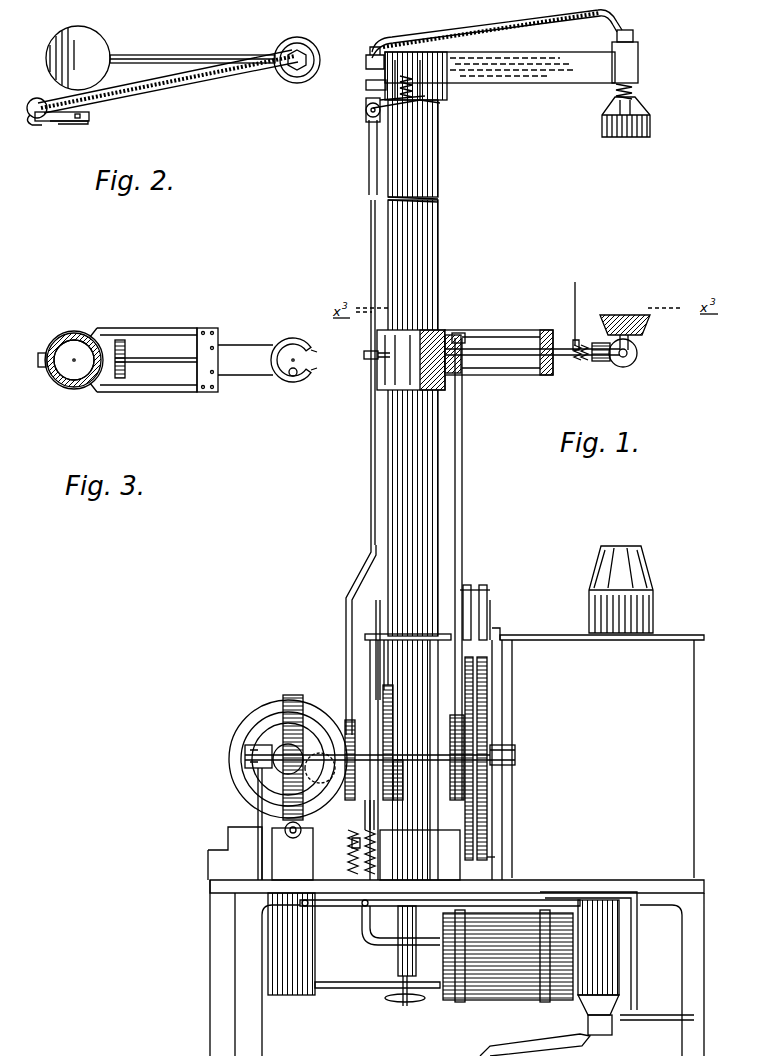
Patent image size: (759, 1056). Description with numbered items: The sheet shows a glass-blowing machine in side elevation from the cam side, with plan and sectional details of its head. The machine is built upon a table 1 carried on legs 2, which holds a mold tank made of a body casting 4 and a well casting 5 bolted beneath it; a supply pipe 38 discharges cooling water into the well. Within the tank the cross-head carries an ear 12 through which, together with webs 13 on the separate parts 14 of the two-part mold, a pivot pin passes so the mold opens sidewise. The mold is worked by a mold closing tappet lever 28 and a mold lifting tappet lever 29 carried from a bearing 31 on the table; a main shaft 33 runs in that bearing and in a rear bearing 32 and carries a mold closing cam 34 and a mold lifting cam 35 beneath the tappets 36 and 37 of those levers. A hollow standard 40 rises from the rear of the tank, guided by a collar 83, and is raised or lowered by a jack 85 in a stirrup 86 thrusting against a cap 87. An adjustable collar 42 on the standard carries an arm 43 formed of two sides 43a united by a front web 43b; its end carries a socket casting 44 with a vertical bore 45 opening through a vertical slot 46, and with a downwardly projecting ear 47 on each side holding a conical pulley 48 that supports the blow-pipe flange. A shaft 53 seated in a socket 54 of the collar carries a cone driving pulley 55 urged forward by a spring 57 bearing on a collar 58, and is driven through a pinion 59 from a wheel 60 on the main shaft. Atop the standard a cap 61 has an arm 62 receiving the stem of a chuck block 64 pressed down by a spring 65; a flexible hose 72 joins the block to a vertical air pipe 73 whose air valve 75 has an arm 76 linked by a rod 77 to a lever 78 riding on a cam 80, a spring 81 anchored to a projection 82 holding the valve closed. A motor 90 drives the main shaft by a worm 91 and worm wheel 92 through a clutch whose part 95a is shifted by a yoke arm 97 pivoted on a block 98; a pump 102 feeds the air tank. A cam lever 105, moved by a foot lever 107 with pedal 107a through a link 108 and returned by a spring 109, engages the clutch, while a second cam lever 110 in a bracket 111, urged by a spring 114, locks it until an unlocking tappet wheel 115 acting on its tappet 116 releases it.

In FIG. 1, the table 1 is at (640, 866).
In FIG. 1, the legs 2 is at (694, 920).
In FIG. 1, the body casting 4 is at (694, 828).
In FIG. 1, the well casting 5 is at (580, 1000).
In FIG. 1, the ear 12 is at (652, 636).
In FIG. 1, the webs 13 is at (650, 632).
In FIG. 1, the separate parts of two-part mold 14 is at (652, 575).
In FIG. 1, the mold closing tappet lever 28 is at (495, 628).
In FIG. 1, the mold lifting tappet lever 29 is at (488, 607).
In FIG. 1, the bearing 31 is at (515, 755).
In FIG. 1, the bearing 32 is at (245, 758).
In FIG. 1, the main shaft 33 is at (415, 755).
In FIG. 1, the mold closing cam 34 is at (490, 856).
In FIG. 1, the mold lifting cam 35 is at (465, 850).
In FIG. 1, the tappet 36 is at (487, 653).
In FIG. 1, the tappet 37 is at (465, 655).
In FIG. 1, the supply pipe 38 is at (520, 1046).
In FIG. 3, the standard 40 is at (78, 340).
In FIG. 1, the standard 40 is at (430, 250).
In FIG. 3, the adjustable collar 42 is at (75, 390).
In FIG. 1, the adjustable collar 42 is at (405, 382).
In FIG. 3, the arm 43 is at (207, 326).
In FIG. 1, the arm 43 is at (530, 328).
In FIG. 3, the sides of arm 43a is at (160, 327).
In FIG. 1, the sides of arm 43a is at (488, 328).
In FIG. 1, the front web 43b is at (555, 372).
In FIG. 3, the socket casting 44 is at (300, 338).
In FIG. 1, the socket casting 44 is at (640, 313).
In FIG. 3, the vertical bore 45 is at (293, 378).
In FIG. 3, the vertical slot 46 is at (316, 360).
In FIG. 1, the vertical slot 46 is at (360, 351).
In FIG. 1, the ear 47 is at (640, 347).
In FIG. 1, the conical pulley 48 is at (638, 358).
In FIG. 3, the shaft 53 is at (156, 351).
In FIG. 1, the shaft 53 is at (487, 360).
In FIG. 1, the socket 54 is at (452, 332).
In FIG. 3, the cone driving pulley 55 is at (121, 338).
In FIG. 1, the cone driving pulley 55 is at (605, 363).
In FIG. 1, the spring 57 is at (585, 343).
In FIG. 1, the collar 58 is at (576, 305).
In FIG. 1, the pinion 59 is at (466, 335).
In FIG. 1, the wheel 60 is at (445, 712).
In FIG. 2, the cap 61 is at (86, 34).
In FIG. 1, the cap 61 is at (447, 95).
In FIG. 2, the arm 62 is at (190, 55).
In FIG. 1, the arm 62 is at (555, 84).
In FIG. 2, the chuck block 64 is at (301, 38).
In FIG. 1, the chuck block 64 is at (652, 126).
In FIG. 1, the spring 65 is at (640, 92).
In FIG. 2, the flexible hose 72 is at (204, 86).
In FIG. 1, the flexible hose 72 is at (522, 16).
In FIG. 1, the vertical air pipe 73 is at (369, 175).
In FIG. 2, the air valve 75 is at (34, 126).
In FIG. 1, the air valve 75 is at (366, 112).
In FIG. 2, the arm 76 is at (72, 124).
In FIG. 1, the arm 76 is at (400, 112).
In FIG. 1, the rod 77 is at (384, 656).
In FIG. 1, the lever 78 is at (388, 677).
In FIG. 1, the cam 80 is at (393, 716).
In FIG. 1, the spring 81 is at (366, 86).
In FIG. 2, the projection 82 is at (90, 116).
In FIG. 1, the projection 82 is at (368, 60).
In FIG. 1, the collar 83 is at (376, 628).
In FIG. 1, the jack 85 is at (403, 1004).
In FIG. 1, the stirrup 86 is at (398, 963).
In FIG. 1, the cap 87 is at (362, 940).
In FIG. 1, the motor 90 is at (232, 730).
In FIG. 1, the worm 91 is at (292, 851).
In FIG. 1, the worm wheel 92 is at (283, 698).
In FIG. 1, the clutch part 95a is at (258, 820).
In FIG. 1, the arm 97 is at (387, 827).
In FIG. 1, the block 98 is at (458, 800).
In FIG. 1, the pump 102 is at (306, 994).
In FIG. 1, the cam lever 105 is at (372, 818).
In FIG. 1, the foot lever 107 is at (570, 892).
In FIG. 1, the pedal 107a is at (658, 1015).
In FIG. 1, the link 108 is at (362, 858).
In FIG. 1, the spring 109 is at (378, 872).
In FIG. 1, the second cam lever 110 is at (330, 800).
In FIG. 1, the bracket 111 is at (352, 845).
In FIG. 1, the spring 114 is at (350, 906).
In FIG. 1, the unlocking tappet wheel 115 is at (346, 720).
In FIG. 1, the tappet 116 is at (395, 790).